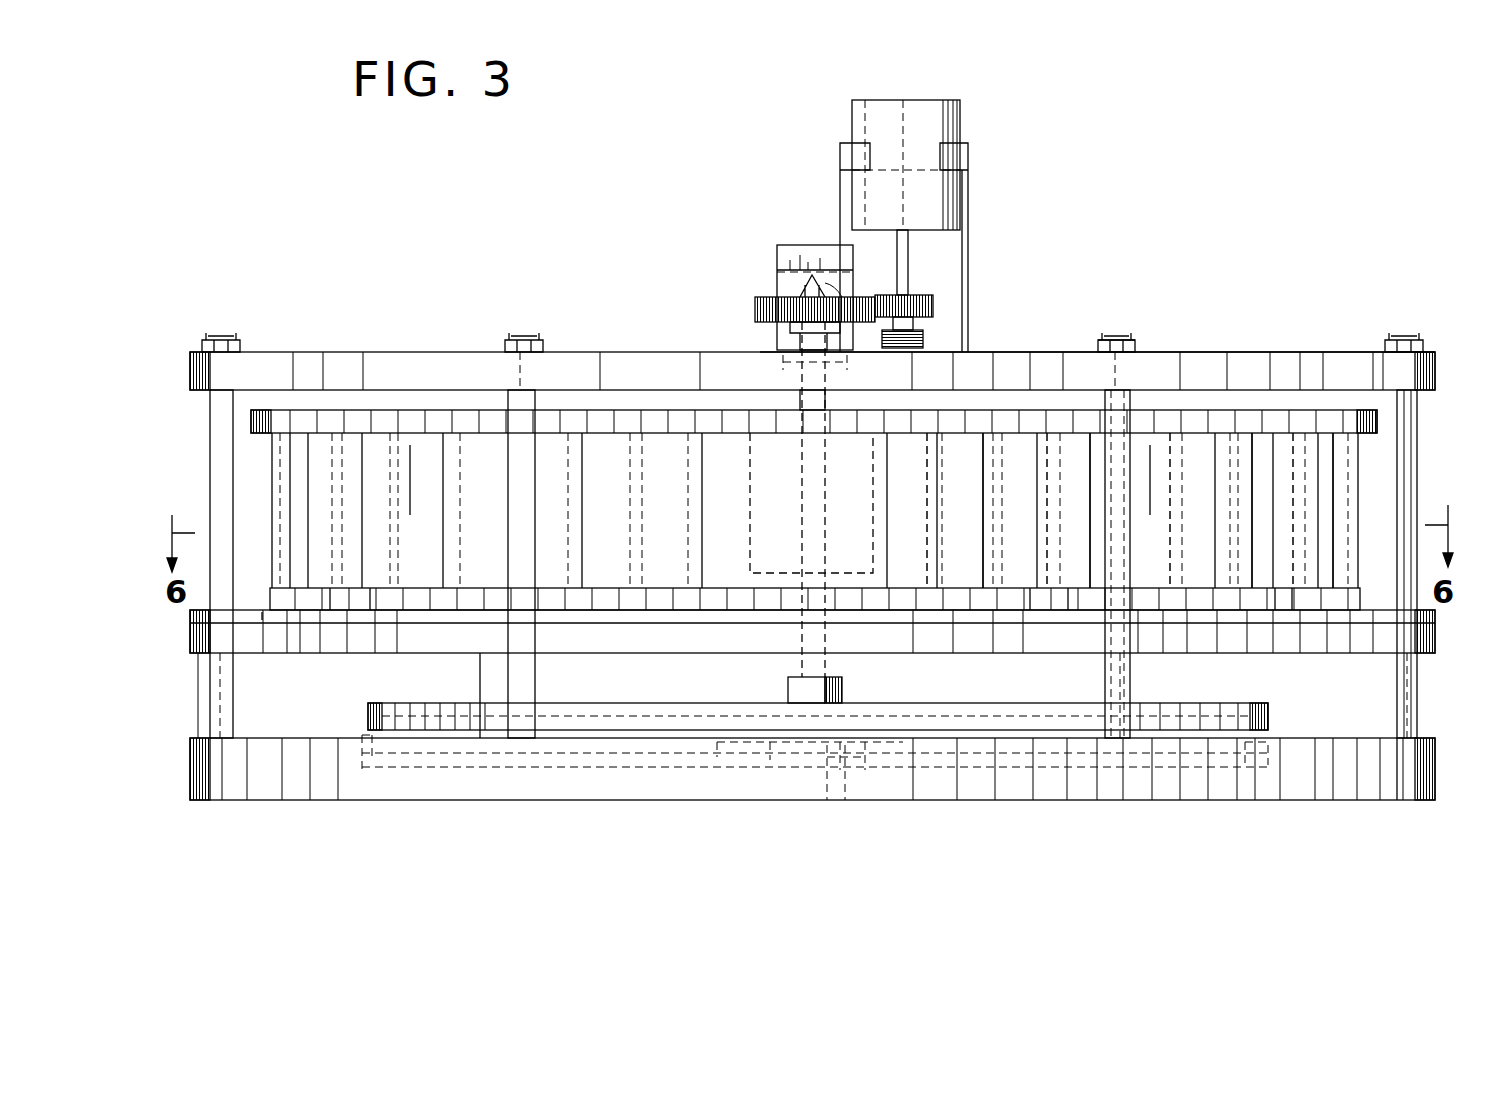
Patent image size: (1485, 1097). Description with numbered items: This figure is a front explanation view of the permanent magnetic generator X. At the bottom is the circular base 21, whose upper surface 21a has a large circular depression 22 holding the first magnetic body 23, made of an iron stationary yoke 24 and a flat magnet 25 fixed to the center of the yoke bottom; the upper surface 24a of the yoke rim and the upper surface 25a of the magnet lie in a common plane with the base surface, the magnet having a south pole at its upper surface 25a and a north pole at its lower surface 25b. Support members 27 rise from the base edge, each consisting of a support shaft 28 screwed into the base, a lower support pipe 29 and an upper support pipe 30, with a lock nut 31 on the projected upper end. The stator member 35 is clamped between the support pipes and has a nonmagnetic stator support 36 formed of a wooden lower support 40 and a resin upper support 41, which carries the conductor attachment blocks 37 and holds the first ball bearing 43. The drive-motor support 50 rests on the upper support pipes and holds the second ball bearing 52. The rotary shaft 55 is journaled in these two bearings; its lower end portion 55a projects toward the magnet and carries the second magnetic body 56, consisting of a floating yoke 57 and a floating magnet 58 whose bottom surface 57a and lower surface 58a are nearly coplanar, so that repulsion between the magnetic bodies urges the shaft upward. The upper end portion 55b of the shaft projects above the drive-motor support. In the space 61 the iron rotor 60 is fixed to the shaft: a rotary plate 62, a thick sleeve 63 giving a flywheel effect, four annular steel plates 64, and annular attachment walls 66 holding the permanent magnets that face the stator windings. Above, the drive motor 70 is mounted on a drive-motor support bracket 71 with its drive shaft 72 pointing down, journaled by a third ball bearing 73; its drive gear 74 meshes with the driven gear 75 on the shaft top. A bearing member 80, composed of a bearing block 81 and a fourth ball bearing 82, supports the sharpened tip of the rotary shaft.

The base 21 is at (1078, 802).
The upper surface of the base 21a is at (1357, 726).
The circular depression 22 is at (1284, 766).
The first magnetic body 23 is at (900, 740).
The stationary yoke 24 is at (1168, 760).
The upper surface of the stationary yoke circumferential edge portion 24a is at (1262, 736).
The magnet 25 is at (795, 745).
The upper surface of the magnet 25a is at (862, 760).
The lower surface of the magnet 25b is at (845, 760).
The support members 27 is at (237, 518).
The support shaft 28 is at (527, 372).
The lower support pipe 29 is at (528, 683).
The upper support pipe 30 is at (223, 487).
The lock nut 31 is at (232, 340).
The stator member 35 is at (655, 655).
The stator support 36 is at (485, 650).
The conductor attachment blocks 37 is at (372, 600).
The lower support 40 is at (205, 660).
The upper support 41 is at (265, 612).
The first ball bearing 43 is at (800, 575).
The drive-motor support 50 is at (1096, 306).
The second ball bearing 52 is at (790, 363).
The rotary shaft 55 is at (795, 285).
The lower end portion of the rotary shaft 55a is at (842, 690).
The upper shaft end 55b is at (843, 290).
The second magnetic body 56 is at (770, 742).
The floating yoke 57 is at (818, 777).
The bottom surface of the floating yoke circumferential edge portion 57a is at (362, 735).
The floating magnet 58 is at (880, 735).
The lower surface of the floating magnet 58a is at (782, 697).
The rotor 60 is at (1097, 325).
The space 61 is at (452, 372).
The rotary plate 62 is at (1384, 371).
The sleeve 63 is at (858, 512).
The annular steel plates 64 is at (990, 558).
The annular attachment walls 66 is at (938, 497).
The drive motor 70 is at (958, 118).
The drive-motor support bracket 71 is at (968, 240).
The drive shaft 72 is at (908, 282).
The third ball bearing 73 is at (925, 340).
The drive gear 74 is at (933, 310).
The driven gear 75 is at (757, 308).
The bearing member 80 is at (783, 252).
The bearing block 81 is at (823, 250).
The fourth ball bearing 82 is at (840, 262).
The permanent magnetic generator X is at (1045, 175).